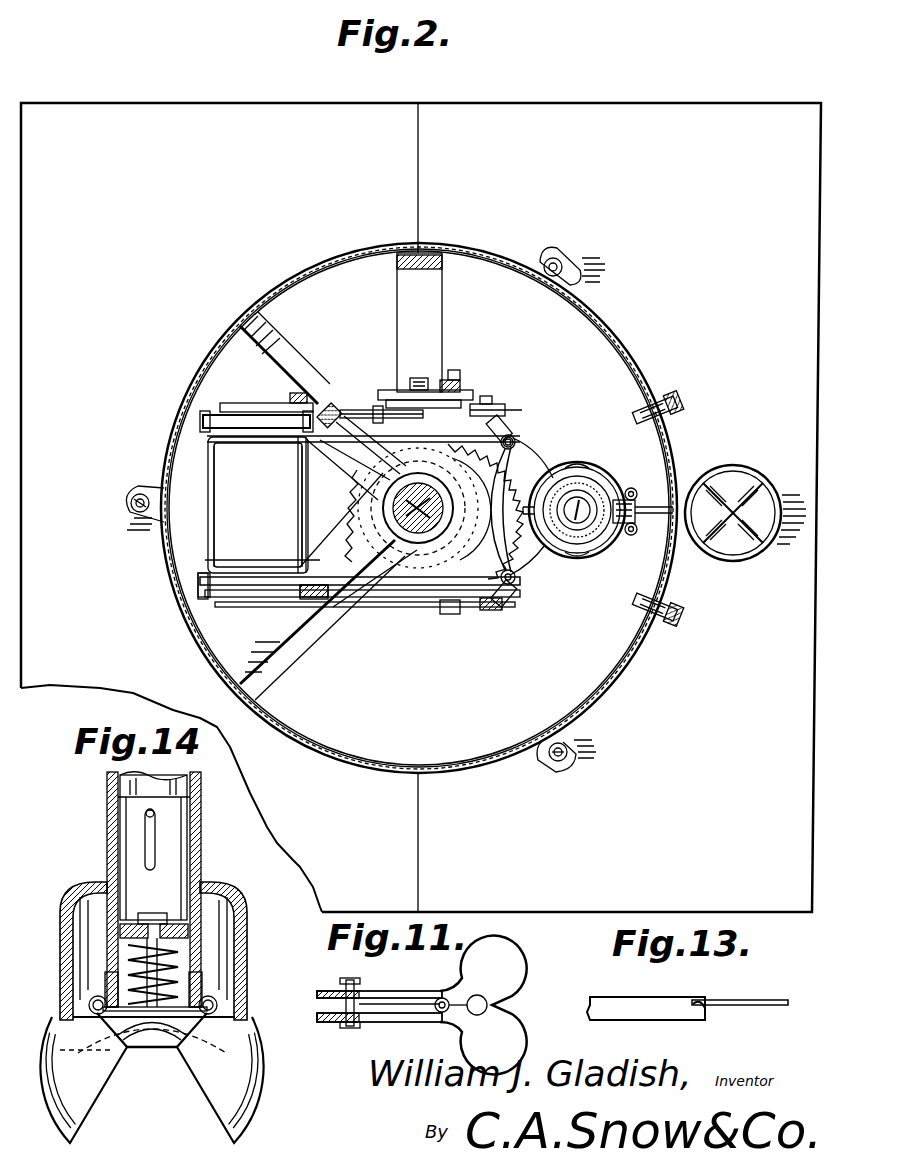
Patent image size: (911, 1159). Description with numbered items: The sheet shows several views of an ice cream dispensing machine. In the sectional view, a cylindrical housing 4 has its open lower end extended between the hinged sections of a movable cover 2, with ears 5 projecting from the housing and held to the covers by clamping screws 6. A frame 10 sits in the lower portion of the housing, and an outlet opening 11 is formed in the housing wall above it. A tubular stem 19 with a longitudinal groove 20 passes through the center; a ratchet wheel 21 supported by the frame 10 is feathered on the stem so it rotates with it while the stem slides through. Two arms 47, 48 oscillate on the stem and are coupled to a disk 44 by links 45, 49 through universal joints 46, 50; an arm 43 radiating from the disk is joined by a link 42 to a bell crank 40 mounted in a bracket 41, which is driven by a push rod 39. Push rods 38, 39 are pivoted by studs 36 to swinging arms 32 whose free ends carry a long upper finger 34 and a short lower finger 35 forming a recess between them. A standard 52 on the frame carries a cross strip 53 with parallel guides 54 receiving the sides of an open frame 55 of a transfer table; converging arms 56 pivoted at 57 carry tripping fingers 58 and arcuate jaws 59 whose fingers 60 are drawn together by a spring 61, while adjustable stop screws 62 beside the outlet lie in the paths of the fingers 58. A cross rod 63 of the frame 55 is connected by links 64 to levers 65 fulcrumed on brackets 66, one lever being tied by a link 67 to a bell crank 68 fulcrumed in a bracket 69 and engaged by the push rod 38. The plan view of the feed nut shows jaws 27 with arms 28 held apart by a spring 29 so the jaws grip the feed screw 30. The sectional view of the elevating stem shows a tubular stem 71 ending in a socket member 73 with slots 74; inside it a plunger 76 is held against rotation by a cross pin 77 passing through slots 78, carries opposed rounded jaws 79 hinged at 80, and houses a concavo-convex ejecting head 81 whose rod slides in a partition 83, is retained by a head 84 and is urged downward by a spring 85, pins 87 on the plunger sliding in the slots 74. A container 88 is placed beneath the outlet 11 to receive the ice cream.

In FIG. 2, the movable cover 2 is at (421, 507).
In FIG. 2, the housing 4 is at (612, 342).
In FIG. 2, the ears 5 is at (578, 270).
In FIG. 2, the clamping screws 6 is at (565, 258).
In FIG. 2, the frame 10 is at (400, 298).
In FIG. 2, the outlet opening 11 is at (680, 449).
In FIG. 2, the tubular stem 19 is at (350, 545).
In FIG. 2, the longitudinal groove 20 is at (430, 536).
In FIG. 2, the ratchet wheel 21 is at (445, 575).
In FIG. 11, the jaws 27 is at (478, 978).
In FIG. 11, the arms 28 is at (385, 991).
In FIG. 11, the spring 29 is at (345, 1008).
In FIG. 2, the feed screw 30 is at (404, 540).
In FIG. 13, the arms 32 is at (612, 1002).
In FIG. 13, the long upper finger 34 is at (766, 1000).
In FIG. 13, the short lower finger 35 is at (700, 1020).
In FIG. 2, the studs 36 is at (496, 378).
In FIG. 2, the push rod 38 is at (470, 618).
In FIG. 2, the push rod 39 is at (498, 385).
In FIG. 2, the bell crank 40 is at (470, 378).
In FIG. 2, the bracket 41 is at (445, 384).
In FIG. 2, the link 42 is at (412, 390).
In FIG. 2, the arm 43 is at (418, 474).
In FIG. 2, the disk 44 is at (380, 404).
In FIG. 2, the link 45 is at (505, 395).
In FIG. 2, the universal joints 46 is at (520, 406).
In FIG. 2, the arm 47 is at (517, 440).
In FIG. 2, the arm 48 is at (350, 500).
In FIG. 2, the link 49 is at (368, 408).
In FIG. 2, the universal joints 50 is at (328, 405).
In FIG. 2, the standard 52 is at (548, 462).
In FIG. 2, the cross strip 53 is at (455, 510).
In FIG. 2, the guides 54 is at (355, 466).
In FIG. 2, the open frame 55 is at (240, 446).
In FIG. 2, the converging arms 56 is at (560, 432).
In FIG. 2, the pivot mounting 57 is at (556, 416).
In FIG. 2, the tripping fingers 58 is at (521, 432).
In FIG. 2, the arcuate jaws 59 is at (588, 476).
In FIG. 2, the fingers 60 is at (636, 488).
In FIG. 2, the spring 61 is at (640, 514).
In FIG. 2, the adjustable stop screws 62 is at (676, 412).
In FIG. 2, the cross rod 63 is at (298, 478).
In FIG. 2, the links 64 is at (206, 445).
In FIG. 2, the levers 65 is at (212, 411).
In FIG. 2, the brackets 66 is at (292, 402).
In FIG. 2, the link 67 is at (245, 414).
In FIG. 2, the bell crank 68 is at (266, 412).
In FIG. 2, the bracket 69 is at (350, 612).
In FIG. 2, the tubular elevating stem 71 is at (578, 542).
In FIG. 14, the tubular elevating stem 71 is at (107, 798).
In FIG. 2, the socket member 73 is at (547, 527).
In FIG. 14, the socket member 73 is at (60, 938).
In FIG. 14, the slots 74 is at (95, 1043).
In FIG. 2, the plunger 76 is at (606, 478).
In FIG. 14, the plunger 76 is at (202, 832).
In FIG. 14, the cross pin 77 is at (155, 812).
In FIG. 14, the slots 78 is at (145, 836).
In FIG. 14, the rounded jaws 79 is at (56, 1034).
In FIG. 14, the hinge connection 80 is at (88, 1004).
In FIG. 14, the ejecting head 81 is at (148, 1050).
In FIG. 14, the partition 83 is at (190, 932).
In FIG. 2, the head 84 is at (583, 512).
In FIG. 14, the head 84 is at (160, 920).
In FIG. 14, the spring 85 is at (178, 952).
In FIG. 14, the pins 87 is at (105, 975).
In FIG. 2, the container 88 is at (725, 556).